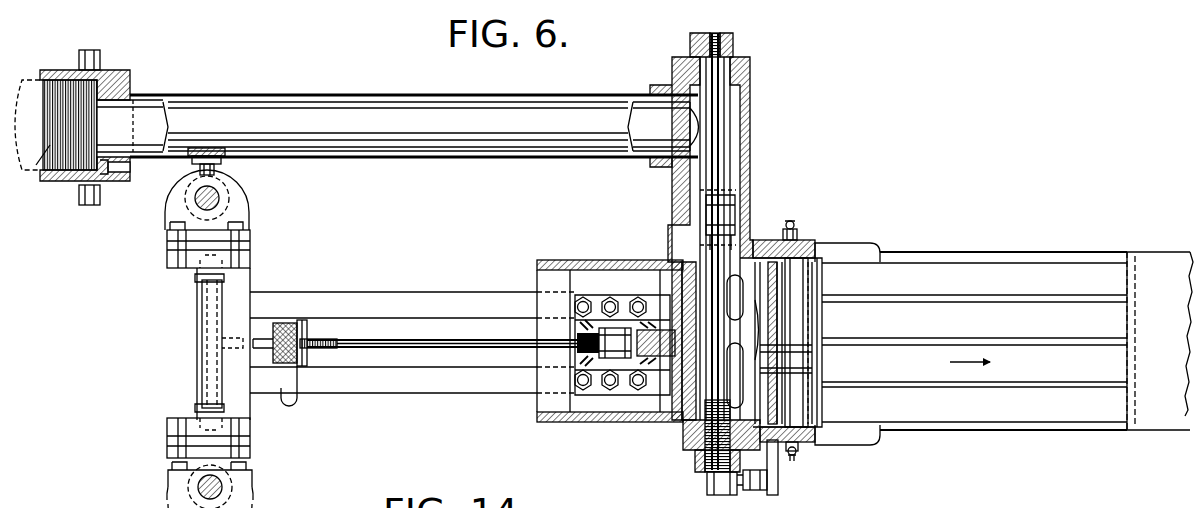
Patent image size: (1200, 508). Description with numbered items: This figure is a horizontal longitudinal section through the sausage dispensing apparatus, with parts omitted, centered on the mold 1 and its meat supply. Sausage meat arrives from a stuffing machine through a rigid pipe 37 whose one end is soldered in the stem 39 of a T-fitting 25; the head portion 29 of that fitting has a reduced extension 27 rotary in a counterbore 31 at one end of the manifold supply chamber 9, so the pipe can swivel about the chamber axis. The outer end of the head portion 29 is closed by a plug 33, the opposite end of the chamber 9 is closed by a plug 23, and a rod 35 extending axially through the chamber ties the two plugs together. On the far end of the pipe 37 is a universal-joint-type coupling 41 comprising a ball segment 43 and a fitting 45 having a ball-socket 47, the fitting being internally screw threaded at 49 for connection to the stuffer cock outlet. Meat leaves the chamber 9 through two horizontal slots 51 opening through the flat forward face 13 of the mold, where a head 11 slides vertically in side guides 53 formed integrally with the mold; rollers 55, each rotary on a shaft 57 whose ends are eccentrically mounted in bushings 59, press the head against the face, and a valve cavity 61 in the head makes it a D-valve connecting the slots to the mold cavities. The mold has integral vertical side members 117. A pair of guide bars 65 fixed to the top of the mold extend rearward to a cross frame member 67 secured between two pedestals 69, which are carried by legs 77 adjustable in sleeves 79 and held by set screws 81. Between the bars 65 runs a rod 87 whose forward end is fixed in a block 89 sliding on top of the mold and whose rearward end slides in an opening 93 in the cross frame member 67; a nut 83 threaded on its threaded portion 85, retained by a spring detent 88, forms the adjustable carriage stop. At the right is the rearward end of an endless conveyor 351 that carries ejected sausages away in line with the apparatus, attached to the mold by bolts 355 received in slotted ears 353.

The mold 1 is at (668, 428).
The manifold supply chamber 9 is at (745, 332).
The head 11 is at (790, 353).
The forward face of the mold 13 is at (776, 326).
The plug 23 is at (695, 462).
The T-fitting 25 is at (756, 122).
The reduced extension 27 is at (683, 257).
The head portion 29 is at (751, 150).
The counterbore 31 is at (670, 244).
The plug 33 is at (734, 45).
The rod 35 is at (720, 169).
The pipe 37 is at (409, 136).
The stem of the T-fitting 39 is at (661, 168).
The universal-joint-type coupling 41 is at (87, 207).
The ball segment 43 is at (111, 182).
The fitting 45 is at (80, 72).
The ball-socket 47 is at (132, 74).
The internal screw threads 49 is at (52, 150).
The slots 51 is at (735, 341).
The side guides 53 is at (818, 241).
The rollers 55 is at (812, 401).
The shaft 57 is at (821, 284).
The bushings 59 is at (808, 241).
The valve cavity 61 is at (778, 370).
The guide bars 65 is at (428, 298).
The cross frame member 67 is at (250, 279).
The pedestals 69 is at (167, 239).
The legs 77 is at (220, 198).
The sleeves 79 is at (192, 195).
The set screws 81 is at (222, 168).
The nut 83 is at (280, 322).
The threaded portion 85 is at (330, 347).
The rod 87 is at (437, 347).
The spring detent 88 is at (288, 404).
The block 89 is at (652, 368).
The opening 93 is at (236, 350).
The side members 117 is at (606, 260).
The endless conveyor 351 is at (997, 432).
The slotted ears 353 is at (720, 495).
The bolts 355 is at (748, 488).